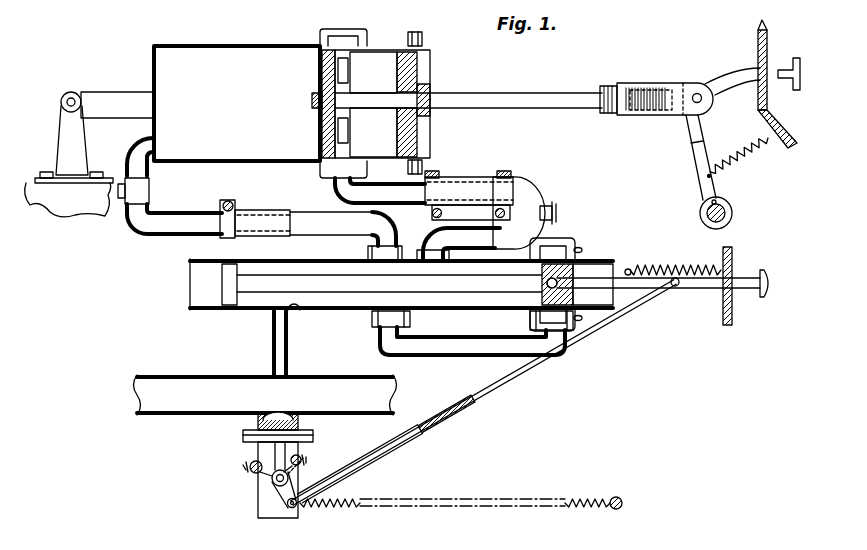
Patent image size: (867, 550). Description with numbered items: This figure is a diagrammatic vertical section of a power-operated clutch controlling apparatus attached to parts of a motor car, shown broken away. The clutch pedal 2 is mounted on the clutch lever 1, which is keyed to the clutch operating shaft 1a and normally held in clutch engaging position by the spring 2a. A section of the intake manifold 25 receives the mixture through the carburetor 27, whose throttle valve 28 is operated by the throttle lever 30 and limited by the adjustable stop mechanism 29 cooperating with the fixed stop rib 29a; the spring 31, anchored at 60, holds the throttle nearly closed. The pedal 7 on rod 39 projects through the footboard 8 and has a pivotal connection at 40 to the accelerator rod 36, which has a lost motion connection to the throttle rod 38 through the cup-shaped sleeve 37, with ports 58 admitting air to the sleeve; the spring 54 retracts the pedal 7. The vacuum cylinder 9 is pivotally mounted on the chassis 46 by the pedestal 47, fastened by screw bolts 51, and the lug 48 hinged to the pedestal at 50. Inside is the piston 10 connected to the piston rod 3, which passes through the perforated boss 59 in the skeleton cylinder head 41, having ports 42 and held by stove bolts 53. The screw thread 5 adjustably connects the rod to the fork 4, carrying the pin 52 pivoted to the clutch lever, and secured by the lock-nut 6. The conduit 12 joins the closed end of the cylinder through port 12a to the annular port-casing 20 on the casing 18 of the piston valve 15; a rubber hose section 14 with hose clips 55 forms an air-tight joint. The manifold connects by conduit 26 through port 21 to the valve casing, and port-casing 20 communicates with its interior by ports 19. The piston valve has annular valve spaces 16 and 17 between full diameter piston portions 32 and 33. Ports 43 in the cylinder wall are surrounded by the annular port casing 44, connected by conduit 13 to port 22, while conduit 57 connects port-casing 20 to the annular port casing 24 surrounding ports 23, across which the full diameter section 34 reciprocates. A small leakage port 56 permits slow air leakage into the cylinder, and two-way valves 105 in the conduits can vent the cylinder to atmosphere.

The clutch lever 1 is at (692, 153).
The clutch operating shaft 1a is at (733, 212).
The clutch pedal 2 is at (797, 58).
The spring 2a is at (745, 162).
The piston rod 3 is at (538, 105).
The fork 4 is at (650, 115).
The screw thread 5 is at (640, 86).
The lock-nut 6 is at (611, 114).
The pedal 7 is at (768, 276).
The footboard 8 is at (733, 316).
The vacuum cylinder 9 is at (253, 46).
The piston 10 is at (345, 73).
The conduit 12 is at (149, 174).
The port 12a is at (158, 146).
The conduit 13 is at (396, 186).
The rubber hose section 14 is at (270, 211).
The piston valve 15 is at (245, 285).
The annular valve space 16 is at (276, 268).
The annular valve space 17 is at (500, 312).
The valve casing 18 is at (214, 311).
The ports 19 is at (396, 276).
The annular port-casing 20 is at (368, 250).
The port 21 is at (296, 312).
The port 22 is at (444, 264).
The ports 23 is at (578, 254).
The annular port casing 24 is at (562, 240).
The intake manifold 25 is at (203, 377).
The conduit 26 is at (273, 350).
The carburetor 27 is at (260, 503).
The throttle valve 28 is at (300, 482).
The adjustable stop mechanism 29 is at (305, 463).
The fixed stop rib 29a is at (274, 452).
The throttle lever 30 is at (290, 508).
The spring 31 is at (334, 508).
The piston portion 32 is at (376, 314).
The piston portion 33 is at (228, 292).
The full diameter section 34 is at (580, 269).
The accelerator rod 36 is at (524, 378).
The cup-shaped sleeve 37 is at (392, 452).
The throttle rod 38 is at (348, 492).
The rod 39 is at (620, 288).
The pivotal connection 40 is at (676, 288).
The skeleton cylinder head 41 is at (398, 144).
The ports 42 is at (412, 72).
The ports 43 is at (343, 34).
The annular port casing 44 is at (322, 31).
The chassis 46 is at (78, 208).
The pedestal 47 is at (58, 125).
The lug 48 is at (130, 82).
The pivot 50 is at (78, 80).
The screw bolts 51 is at (44, 172).
The pin 52 is at (703, 99).
The stove bolts 53 is at (420, 40).
The spring 54 is at (670, 266).
The hose clips 55 is at (229, 202).
The leakage port 56 is at (470, 312).
The conduit 57 is at (452, 356).
The ports 58 is at (424, 424).
The perforated boss 59 is at (436, 88).
The anchor 60 is at (620, 499).
The two-way valves 105 is at (149, 192).